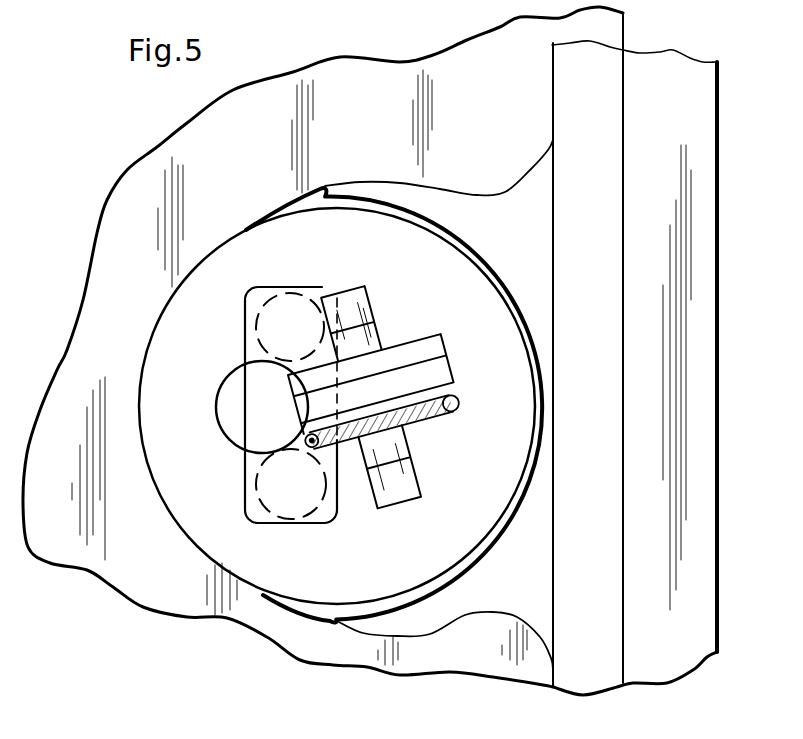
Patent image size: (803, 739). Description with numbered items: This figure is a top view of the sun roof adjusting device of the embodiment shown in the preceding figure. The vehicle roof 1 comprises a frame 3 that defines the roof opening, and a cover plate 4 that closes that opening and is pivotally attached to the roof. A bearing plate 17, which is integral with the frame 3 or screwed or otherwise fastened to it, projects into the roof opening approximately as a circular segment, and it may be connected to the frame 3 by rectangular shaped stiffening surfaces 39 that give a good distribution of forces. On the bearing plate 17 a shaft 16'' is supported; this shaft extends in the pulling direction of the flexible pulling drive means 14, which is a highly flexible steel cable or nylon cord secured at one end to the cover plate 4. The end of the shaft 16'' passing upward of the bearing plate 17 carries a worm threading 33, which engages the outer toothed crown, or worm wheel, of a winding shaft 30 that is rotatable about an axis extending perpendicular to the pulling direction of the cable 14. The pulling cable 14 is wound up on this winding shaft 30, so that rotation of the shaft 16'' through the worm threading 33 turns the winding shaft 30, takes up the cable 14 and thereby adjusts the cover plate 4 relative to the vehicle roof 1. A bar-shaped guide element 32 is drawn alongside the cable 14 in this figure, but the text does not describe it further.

The vehicle roof 1 is at (670, 67).
The frame 3 is at (610, 163).
The cover plate 4 is at (317, 75).
The flexible pulling drive means 14 is at (300, 443).
The shaft 16'' is at (256, 405).
The bearing plate 17 is at (295, 205).
The winding shaft 30 is at (407, 442).
The guide bar 32 is at (435, 348).
The worm threading 33 is at (232, 370).
The stiffening surfaces 39 is at (476, 207).